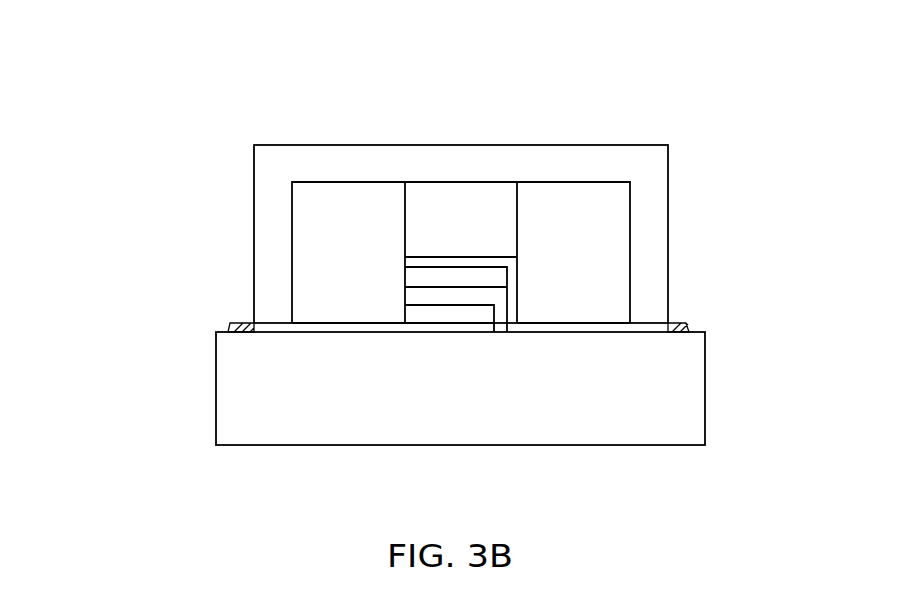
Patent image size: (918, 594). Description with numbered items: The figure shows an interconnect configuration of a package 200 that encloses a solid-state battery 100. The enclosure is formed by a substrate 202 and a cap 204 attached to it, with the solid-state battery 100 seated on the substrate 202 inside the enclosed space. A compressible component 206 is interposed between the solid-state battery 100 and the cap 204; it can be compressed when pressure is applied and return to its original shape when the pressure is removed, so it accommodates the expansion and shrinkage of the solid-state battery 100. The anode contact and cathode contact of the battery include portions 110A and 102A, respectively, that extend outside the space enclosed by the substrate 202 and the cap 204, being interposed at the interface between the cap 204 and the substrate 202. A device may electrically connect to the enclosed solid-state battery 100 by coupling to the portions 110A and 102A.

The package 200 is at (162, 141).
The cap 204 is at (628, 160).
The compressible component 206 is at (483, 230).
The solid-state battery 100 is at (390, 302).
The portion of cathode contact 102A is at (232, 323).
The portion of anode contact 110A is at (690, 326).
The substrate 202 is at (440, 399).